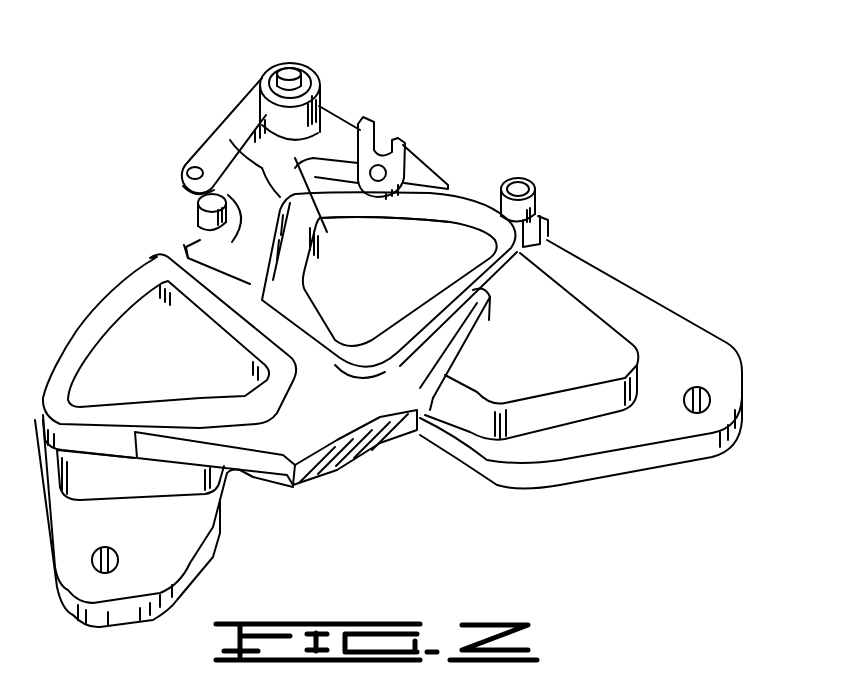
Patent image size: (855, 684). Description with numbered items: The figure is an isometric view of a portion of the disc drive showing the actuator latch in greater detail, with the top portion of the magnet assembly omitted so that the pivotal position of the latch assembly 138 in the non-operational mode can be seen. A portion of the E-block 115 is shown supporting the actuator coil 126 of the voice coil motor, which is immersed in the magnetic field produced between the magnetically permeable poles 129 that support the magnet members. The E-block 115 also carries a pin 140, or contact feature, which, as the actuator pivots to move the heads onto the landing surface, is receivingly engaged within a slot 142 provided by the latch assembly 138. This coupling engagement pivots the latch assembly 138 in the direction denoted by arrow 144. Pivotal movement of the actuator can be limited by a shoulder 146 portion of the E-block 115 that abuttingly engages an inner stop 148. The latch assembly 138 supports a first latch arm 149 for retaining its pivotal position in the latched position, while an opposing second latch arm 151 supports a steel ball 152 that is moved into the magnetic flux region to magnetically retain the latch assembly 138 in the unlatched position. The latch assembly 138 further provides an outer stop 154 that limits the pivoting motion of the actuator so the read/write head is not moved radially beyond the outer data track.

The latch assembly 138 is at (207, 64).
The arrow 144 is at (266, 56).
The second latch arm 151 is at (219, 124).
The steel ball 152 is at (188, 171).
The inner stop 148 is at (194, 211).
The shoulder 146 is at (188, 250).
The slot 142 is at (312, 215).
The first latch arm 149 is at (424, 160).
The outer stop 154 is at (538, 201).
The actuator coil 126 is at (328, 332).
The pin 140 is at (334, 233).
The E-block 115 is at (292, 490).
The magnetically permeable pole 129 is at (667, 470).